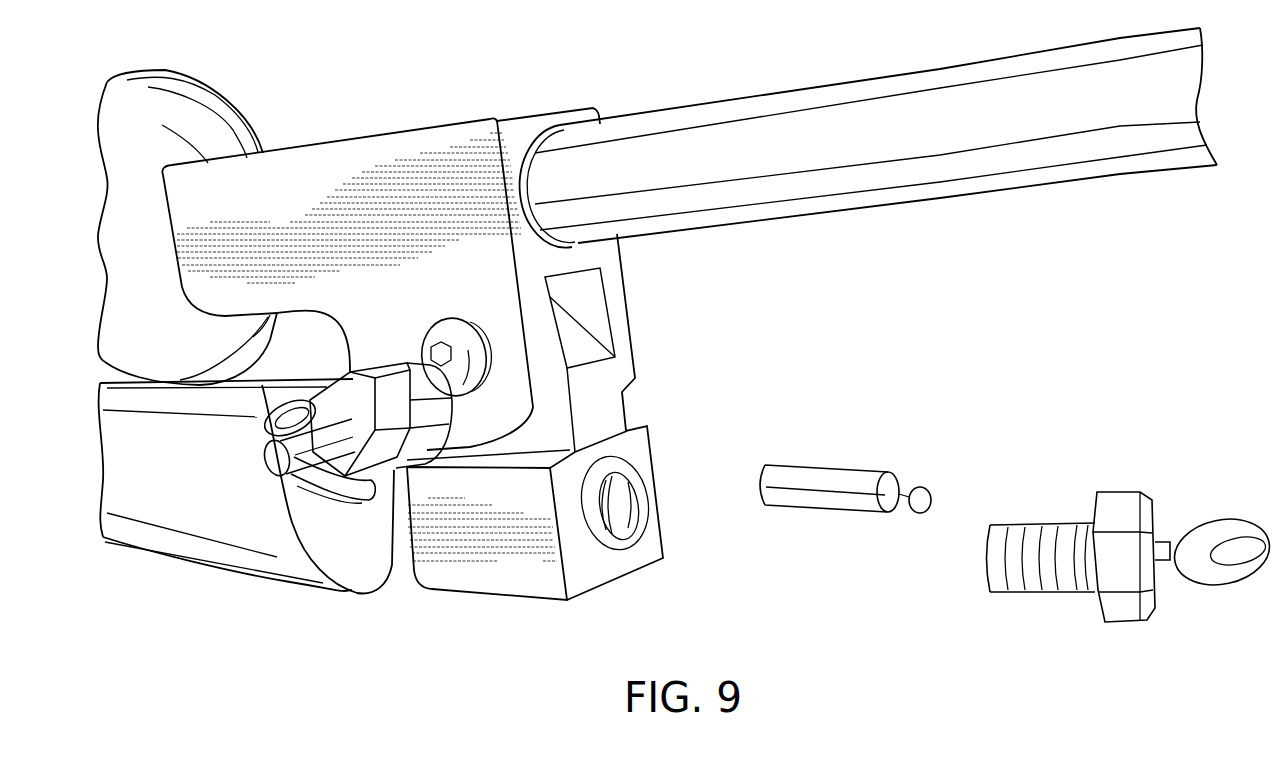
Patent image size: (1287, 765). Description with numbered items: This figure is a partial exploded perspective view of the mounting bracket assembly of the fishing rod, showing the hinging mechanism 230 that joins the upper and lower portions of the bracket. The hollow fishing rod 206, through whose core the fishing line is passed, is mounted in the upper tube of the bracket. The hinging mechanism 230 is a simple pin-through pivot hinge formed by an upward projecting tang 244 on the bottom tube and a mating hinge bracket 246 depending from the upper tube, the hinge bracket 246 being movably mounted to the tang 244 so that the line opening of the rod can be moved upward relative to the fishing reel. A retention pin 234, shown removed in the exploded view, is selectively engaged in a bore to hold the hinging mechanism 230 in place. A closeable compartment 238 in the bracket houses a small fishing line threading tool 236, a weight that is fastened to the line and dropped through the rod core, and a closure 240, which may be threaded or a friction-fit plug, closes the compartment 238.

The hollow fishing rod 206 is at (1045, 160).
The hinging mechanism 230 is at (593, 370).
The retention pin 234 is at (386, 452).
The fishing line threading tool 236 is at (805, 510).
The closeable compartment 238 is at (630, 537).
The closure 240 is at (1120, 582).
The upward projecting tang 244 is at (576, 427).
The hinge bracket 246 is at (618, 312).